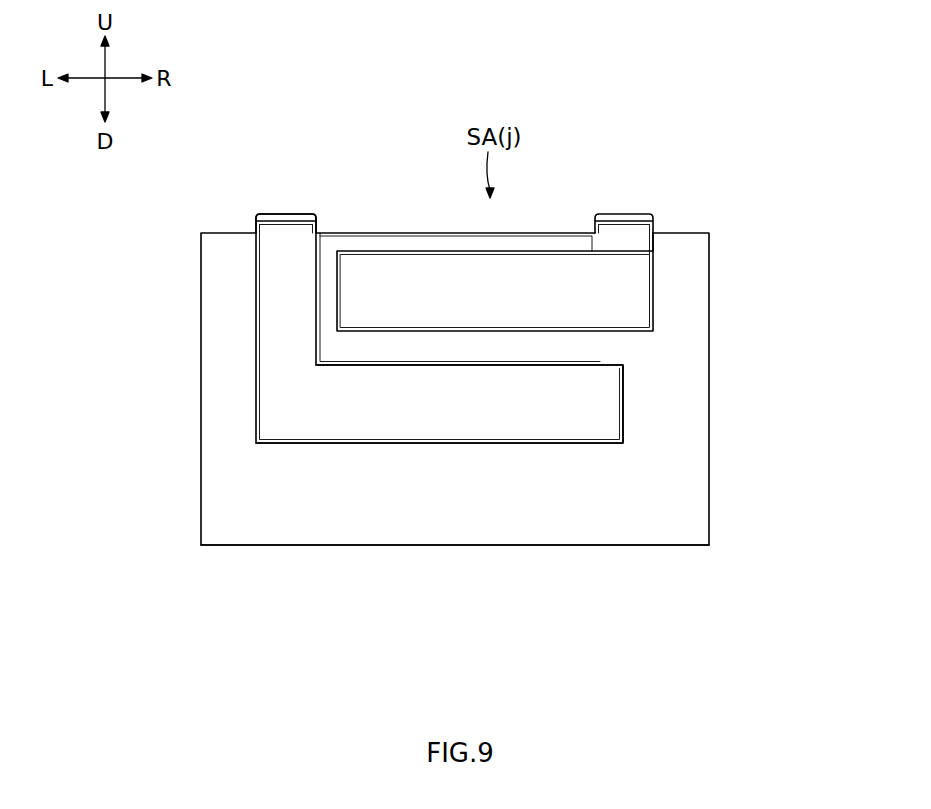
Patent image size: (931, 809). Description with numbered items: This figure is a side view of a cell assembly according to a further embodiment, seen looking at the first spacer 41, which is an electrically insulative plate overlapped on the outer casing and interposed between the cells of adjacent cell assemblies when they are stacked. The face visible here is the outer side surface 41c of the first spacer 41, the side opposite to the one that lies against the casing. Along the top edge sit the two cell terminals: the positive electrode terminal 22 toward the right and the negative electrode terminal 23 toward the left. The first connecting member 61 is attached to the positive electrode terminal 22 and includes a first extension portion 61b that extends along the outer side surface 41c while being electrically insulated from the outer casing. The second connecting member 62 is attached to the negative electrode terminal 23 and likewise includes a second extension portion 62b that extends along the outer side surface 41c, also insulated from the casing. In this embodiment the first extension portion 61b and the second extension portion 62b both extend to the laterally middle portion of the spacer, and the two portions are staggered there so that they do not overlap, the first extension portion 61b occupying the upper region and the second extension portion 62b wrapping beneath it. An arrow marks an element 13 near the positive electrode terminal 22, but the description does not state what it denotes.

The first spacer 41 is at (712, 318).
The outer side surface of the first spacer 41c is at (476, 518).
The negative electrode terminal 23 is at (306, 212).
The positive electrode terminal 22 is at (638, 215).
The second connecting member 62 is at (439, 331).
The second extension portion 62b is at (566, 412).
The first connecting member 61 is at (498, 263).
The first extension portion 61b is at (424, 265).
The electrode edge 13 is at (655, 229).